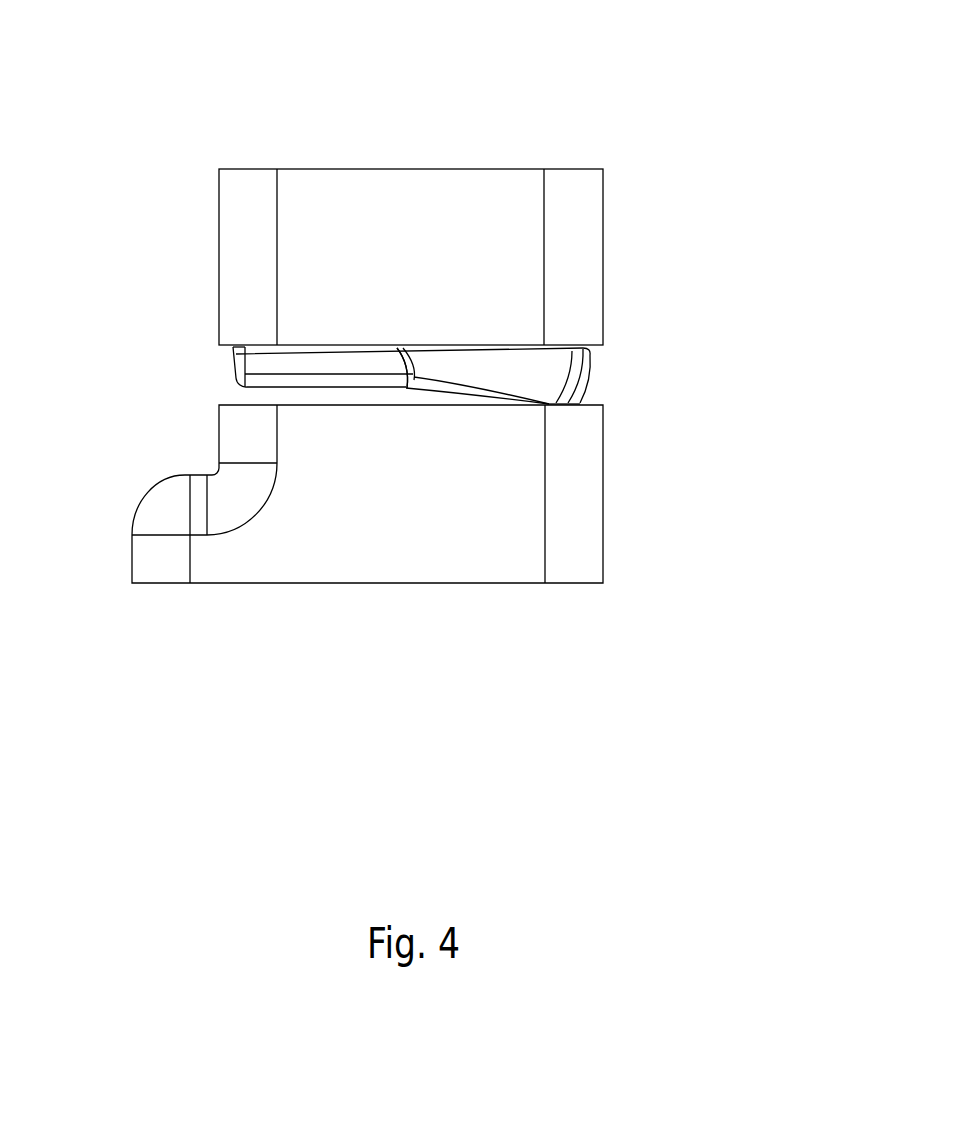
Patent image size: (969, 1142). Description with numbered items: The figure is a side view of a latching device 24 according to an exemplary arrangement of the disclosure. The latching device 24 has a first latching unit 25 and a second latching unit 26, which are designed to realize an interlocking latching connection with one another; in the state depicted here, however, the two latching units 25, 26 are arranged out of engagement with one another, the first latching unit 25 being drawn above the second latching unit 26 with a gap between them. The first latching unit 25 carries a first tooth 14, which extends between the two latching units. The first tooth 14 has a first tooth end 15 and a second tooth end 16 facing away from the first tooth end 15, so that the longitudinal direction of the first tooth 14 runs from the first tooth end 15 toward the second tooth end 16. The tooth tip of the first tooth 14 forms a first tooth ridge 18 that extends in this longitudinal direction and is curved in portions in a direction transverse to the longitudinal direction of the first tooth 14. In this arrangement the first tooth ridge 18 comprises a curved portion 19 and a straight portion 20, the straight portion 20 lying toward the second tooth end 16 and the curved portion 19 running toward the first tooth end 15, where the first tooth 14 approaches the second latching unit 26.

The latching device 24 is at (150, 91).
The first latching unit 25 is at (578, 147).
The second latching unit 26 is at (542, 603).
The second tooth end 16 is at (220, 370).
The first tooth end 15 is at (606, 380).
The first tooth 14 is at (400, 347).
The first tooth ridge 18 is at (401, 388).
The curved portion 19 is at (467, 398).
The straight portion 20 is at (316, 388).